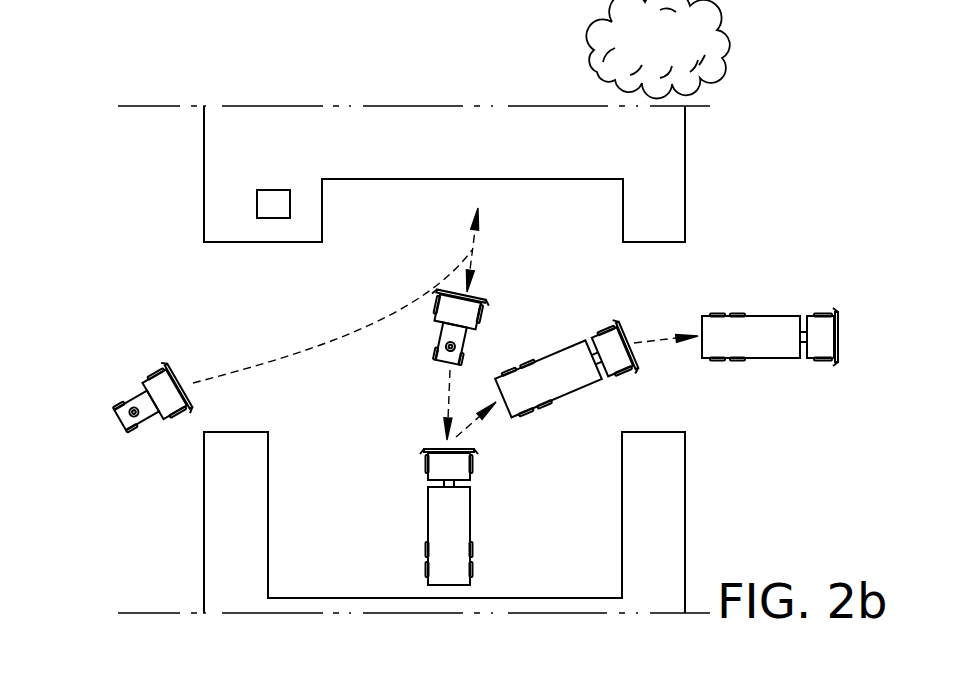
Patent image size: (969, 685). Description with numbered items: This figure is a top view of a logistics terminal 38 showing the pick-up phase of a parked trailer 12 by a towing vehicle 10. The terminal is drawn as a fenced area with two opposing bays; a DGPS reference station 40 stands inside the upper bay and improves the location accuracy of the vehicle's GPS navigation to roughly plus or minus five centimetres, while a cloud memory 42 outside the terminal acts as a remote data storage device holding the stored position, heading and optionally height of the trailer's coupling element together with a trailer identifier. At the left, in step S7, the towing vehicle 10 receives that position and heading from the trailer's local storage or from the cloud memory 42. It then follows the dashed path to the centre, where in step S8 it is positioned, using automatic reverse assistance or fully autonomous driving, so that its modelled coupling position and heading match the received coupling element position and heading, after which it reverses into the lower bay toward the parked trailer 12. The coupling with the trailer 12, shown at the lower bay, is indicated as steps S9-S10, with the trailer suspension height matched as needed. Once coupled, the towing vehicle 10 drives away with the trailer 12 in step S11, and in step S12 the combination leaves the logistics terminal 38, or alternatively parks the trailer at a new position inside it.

The towing vehicle 10 is at (137, 398).
The trailer 12 is at (426, 535).
The logistics terminal 38 is at (377, 68).
The DGPS reference station 40 is at (280, 190).
The cloud memory 42 is at (723, 60).
The receiving step S7 is at (147, 392).
The positioning step S8 is at (437, 335).
The steps S9-S10 - tractor coupled to trailer in dock S9-S10 is at (426, 507).
The drive-away step S11 is at (563, 345).
The exit step S12 is at (773, 313).